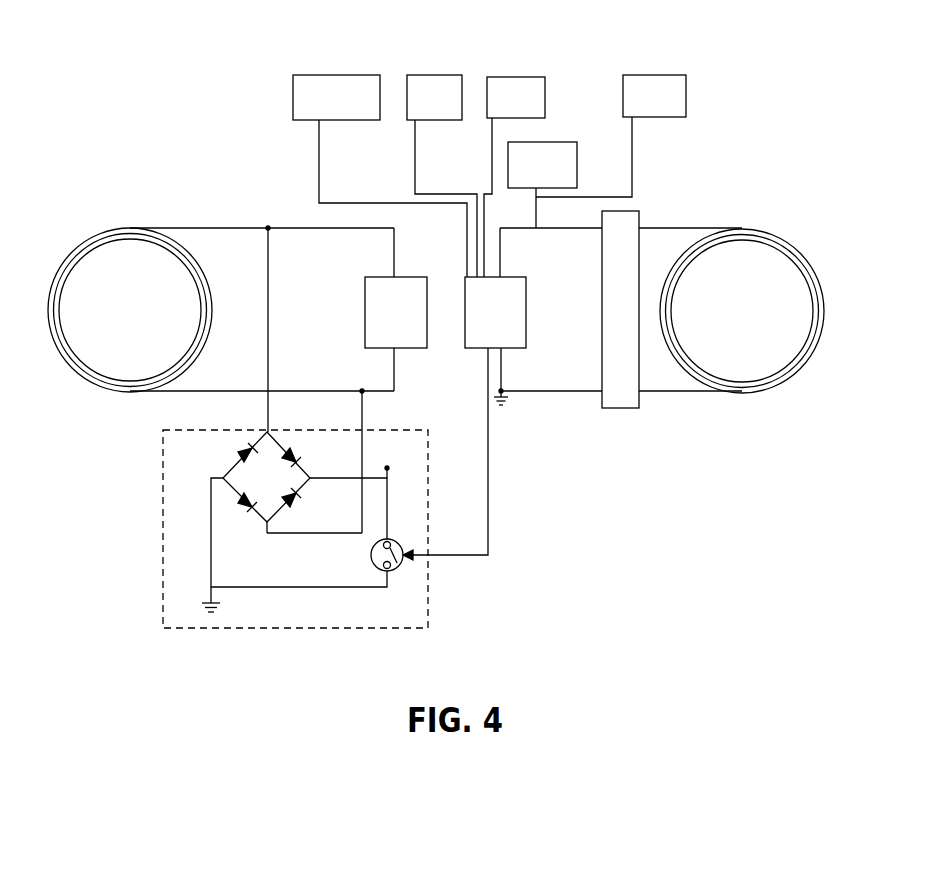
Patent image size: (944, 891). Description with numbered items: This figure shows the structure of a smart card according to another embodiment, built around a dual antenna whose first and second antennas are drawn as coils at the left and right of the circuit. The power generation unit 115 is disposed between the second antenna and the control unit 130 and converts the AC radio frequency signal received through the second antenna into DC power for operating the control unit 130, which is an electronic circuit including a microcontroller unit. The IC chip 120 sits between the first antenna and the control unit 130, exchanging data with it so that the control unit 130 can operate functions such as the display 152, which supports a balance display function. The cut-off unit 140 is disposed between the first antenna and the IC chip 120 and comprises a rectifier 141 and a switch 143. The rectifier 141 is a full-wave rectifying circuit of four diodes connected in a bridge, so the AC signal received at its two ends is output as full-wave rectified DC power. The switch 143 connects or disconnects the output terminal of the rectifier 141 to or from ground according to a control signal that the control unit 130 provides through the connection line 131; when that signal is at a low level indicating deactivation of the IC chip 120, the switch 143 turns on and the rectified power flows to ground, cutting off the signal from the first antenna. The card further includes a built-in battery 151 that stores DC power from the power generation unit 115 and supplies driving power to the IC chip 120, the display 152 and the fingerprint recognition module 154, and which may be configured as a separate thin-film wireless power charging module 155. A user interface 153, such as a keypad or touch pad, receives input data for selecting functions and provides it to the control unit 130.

The power generation unit 115 is at (638, 212).
The IC chip 120 is at (365, 310).
The control unit 130 is at (527, 307).
The connection line 131 is at (490, 551).
The cut-off unit 140 is at (287, 518).
The rectifier 141 is at (233, 462).
The switch 143 is at (403, 540).
The built-in battery 151 is at (553, 142).
The display 152 is at (328, 75).
The user interface 153 is at (432, 75).
The fingerprint recognition module 154 is at (497, 77).
The thin-film wireless power charging module 155 is at (645, 75).